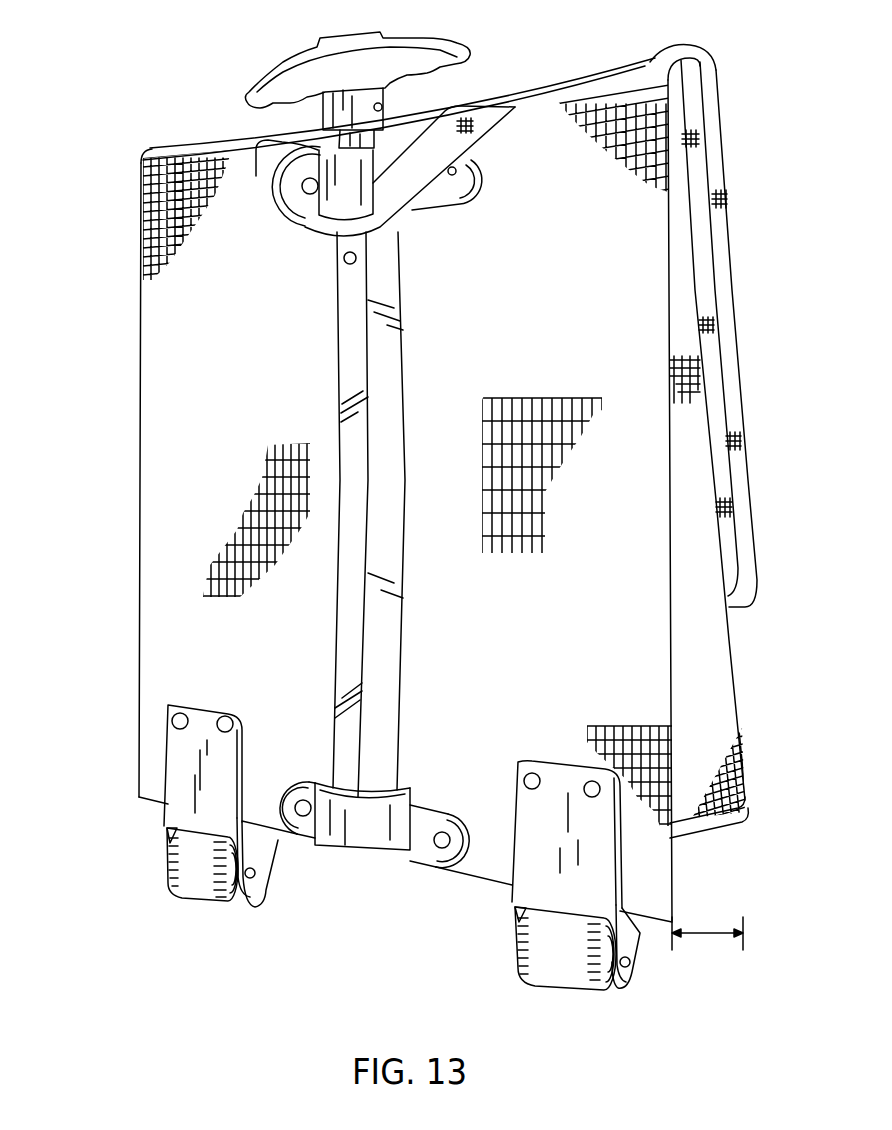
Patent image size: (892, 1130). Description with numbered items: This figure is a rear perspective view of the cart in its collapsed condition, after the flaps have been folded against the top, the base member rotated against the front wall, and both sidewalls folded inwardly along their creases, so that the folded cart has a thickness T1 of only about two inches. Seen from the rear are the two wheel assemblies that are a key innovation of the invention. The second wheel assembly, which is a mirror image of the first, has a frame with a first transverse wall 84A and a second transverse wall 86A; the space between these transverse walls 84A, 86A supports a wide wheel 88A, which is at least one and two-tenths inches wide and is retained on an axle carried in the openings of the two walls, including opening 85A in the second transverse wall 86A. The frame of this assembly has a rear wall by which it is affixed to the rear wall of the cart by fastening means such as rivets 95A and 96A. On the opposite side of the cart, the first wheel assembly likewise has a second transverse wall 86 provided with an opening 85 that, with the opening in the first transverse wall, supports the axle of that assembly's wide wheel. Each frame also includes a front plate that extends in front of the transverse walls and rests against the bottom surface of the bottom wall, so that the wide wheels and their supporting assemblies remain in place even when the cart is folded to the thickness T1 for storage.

The first transverse wall 84A is at (170, 760).
The opening 85A is at (170, 847).
The second transverse wall 86A is at (167, 835).
The wide wheel 88A is at (195, 892).
The rivet 95A is at (233, 725).
The rivet 96A is at (181, 712).
The opening 85 is at (518, 927).
The second transverse wall 86 is at (515, 914).
The thickness T1 is at (707, 950).